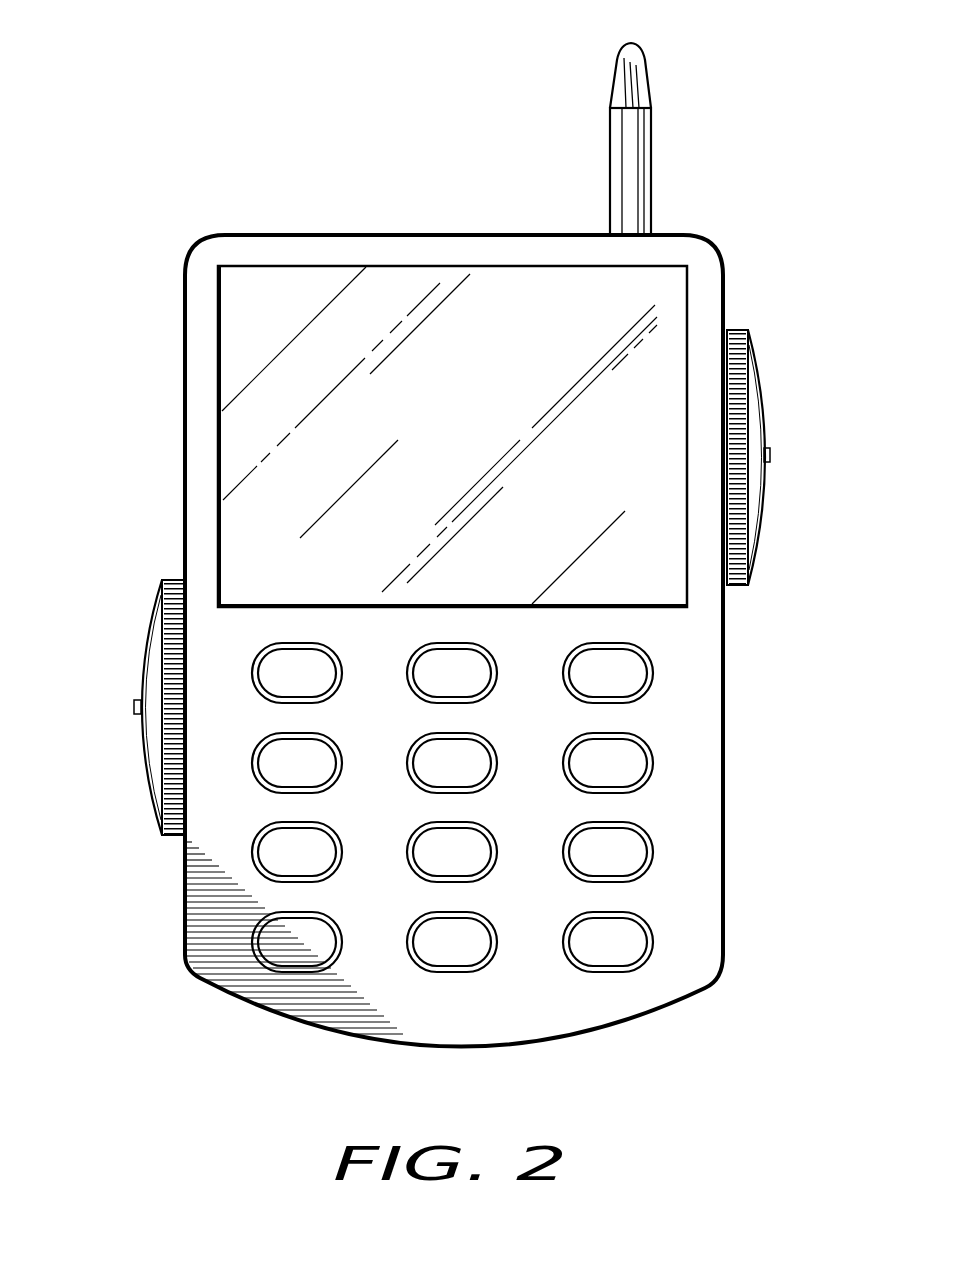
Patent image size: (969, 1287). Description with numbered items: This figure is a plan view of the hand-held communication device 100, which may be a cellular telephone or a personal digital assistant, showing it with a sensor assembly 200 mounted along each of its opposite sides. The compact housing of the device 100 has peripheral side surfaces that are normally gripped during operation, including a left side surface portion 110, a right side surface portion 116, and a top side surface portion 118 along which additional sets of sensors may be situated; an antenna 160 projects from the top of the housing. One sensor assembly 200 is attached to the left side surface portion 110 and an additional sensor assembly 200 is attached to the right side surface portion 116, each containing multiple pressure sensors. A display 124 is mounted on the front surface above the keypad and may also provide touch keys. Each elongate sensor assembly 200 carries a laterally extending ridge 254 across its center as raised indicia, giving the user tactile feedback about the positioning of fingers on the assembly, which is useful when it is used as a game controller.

The hand-held communication device 100 is at (799, 159).
The left side surface portion 110 is at (187, 266).
The right side surface portion 116 is at (724, 757).
The top side surface portion 118 is at (425, 235).
The display 124 is at (651, 378).
The antenna 160 is at (612, 72).
The sensor assembly 200 is at (768, 442).
The laterally extending ridge 254 is at (771, 456).